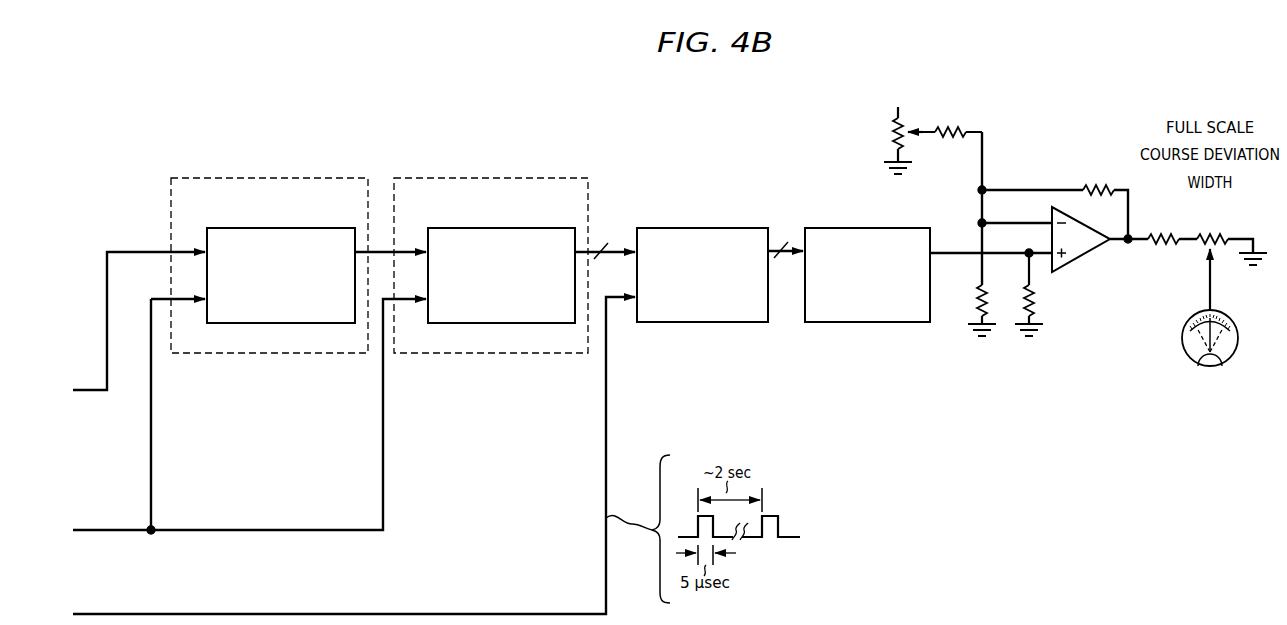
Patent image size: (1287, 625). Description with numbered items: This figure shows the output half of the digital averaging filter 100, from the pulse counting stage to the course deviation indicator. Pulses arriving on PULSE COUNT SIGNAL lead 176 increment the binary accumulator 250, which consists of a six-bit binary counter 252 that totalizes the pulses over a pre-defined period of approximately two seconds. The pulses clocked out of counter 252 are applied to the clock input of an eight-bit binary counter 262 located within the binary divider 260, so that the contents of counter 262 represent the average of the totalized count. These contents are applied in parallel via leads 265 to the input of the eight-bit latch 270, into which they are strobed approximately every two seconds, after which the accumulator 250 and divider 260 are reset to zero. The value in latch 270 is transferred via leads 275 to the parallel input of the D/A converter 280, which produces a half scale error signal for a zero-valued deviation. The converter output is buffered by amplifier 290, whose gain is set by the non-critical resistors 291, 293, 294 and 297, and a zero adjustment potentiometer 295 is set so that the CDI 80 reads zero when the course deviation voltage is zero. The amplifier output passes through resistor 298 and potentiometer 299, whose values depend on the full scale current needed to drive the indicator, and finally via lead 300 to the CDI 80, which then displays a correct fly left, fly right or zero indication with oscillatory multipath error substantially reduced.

The digital averaging filter 100 is at (224, 66).
The PULSE COUNT SIGNAL lead 176 is at (120, 259).
The binary accumulator 250 is at (269, 237).
The 6-bit binary counter 252 is at (282, 228).
The binary divider 260 is at (491, 237).
The 8-bit binary counter 262 is at (502, 228).
The leads 265 is at (596, 246).
The 8-bit latch 270 is at (712, 228).
The leads 275 is at (773, 243).
The D/A converter 280 is at (880, 228).
The amplifier 290 is at (1078, 261).
The resistor 291 is at (1035, 292).
The resistor 293 is at (976, 296).
The resistor 294 is at (950, 138).
The potentiometer 295 is at (902, 118).
The resistor 297 is at (1096, 183).
The resistor 298 is at (1157, 232).
The potentiometer 299 is at (1204, 232).
The lead 300 is at (1208, 281).
The CDI 80 is at (1231, 357).